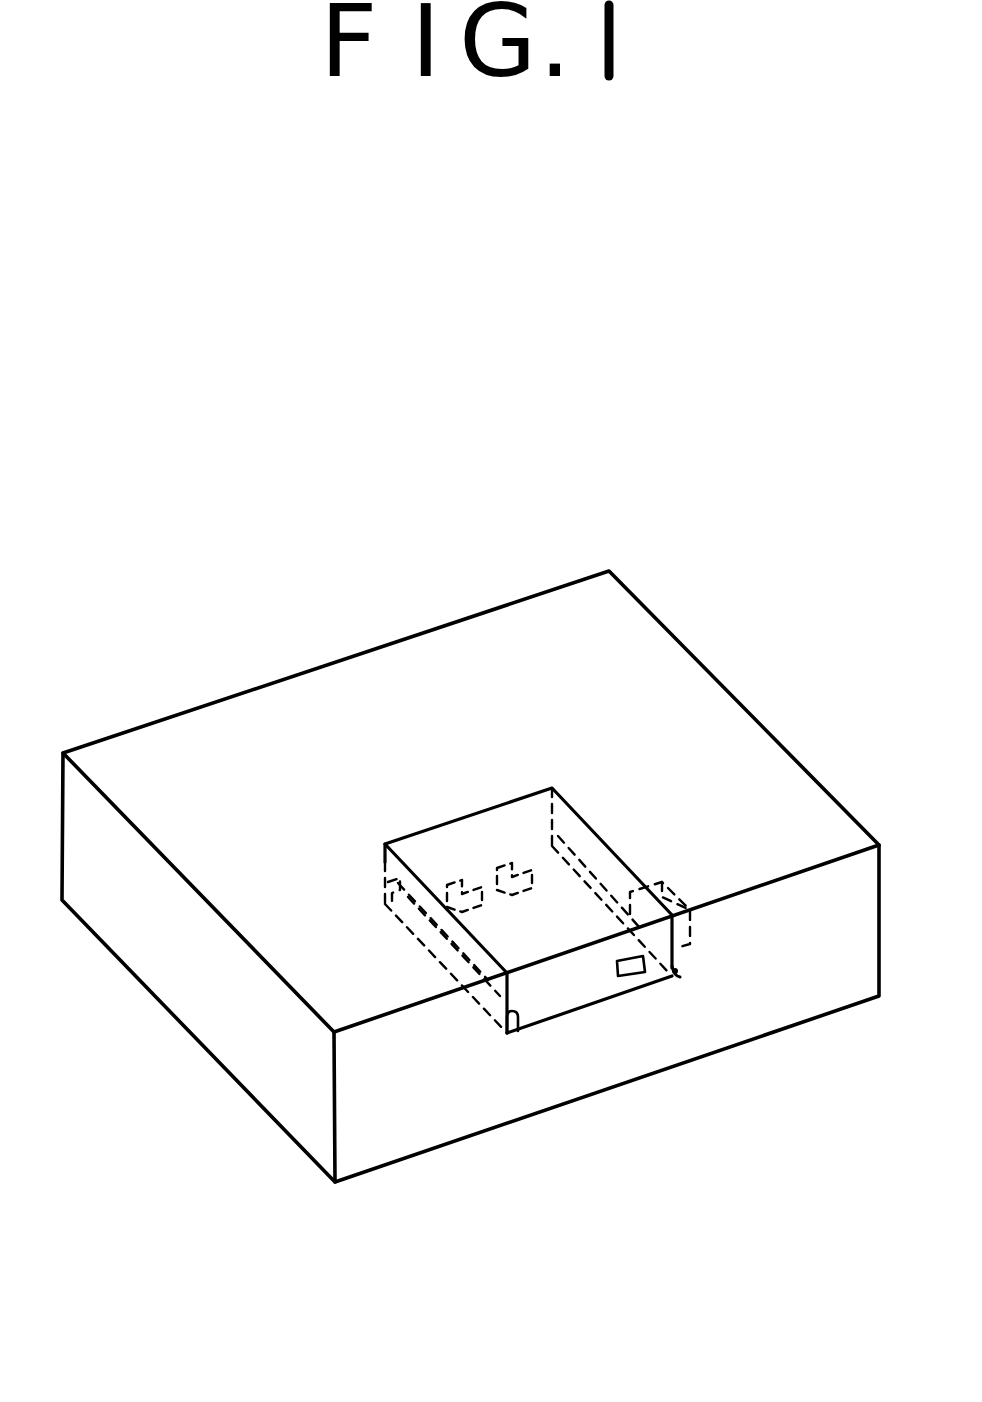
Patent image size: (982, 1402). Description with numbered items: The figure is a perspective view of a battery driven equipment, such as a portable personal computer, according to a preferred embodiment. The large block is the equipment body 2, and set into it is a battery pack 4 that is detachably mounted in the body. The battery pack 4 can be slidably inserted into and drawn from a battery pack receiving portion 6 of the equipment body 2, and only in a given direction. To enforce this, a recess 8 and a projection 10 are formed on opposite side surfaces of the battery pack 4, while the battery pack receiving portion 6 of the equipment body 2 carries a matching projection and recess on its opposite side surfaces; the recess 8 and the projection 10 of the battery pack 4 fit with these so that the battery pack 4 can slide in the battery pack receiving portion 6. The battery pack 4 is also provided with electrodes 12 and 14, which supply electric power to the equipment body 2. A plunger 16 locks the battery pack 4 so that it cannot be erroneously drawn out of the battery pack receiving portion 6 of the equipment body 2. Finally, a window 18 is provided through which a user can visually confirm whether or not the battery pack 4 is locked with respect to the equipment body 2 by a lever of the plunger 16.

The equipment body 2 is at (665, 665).
The battery pack 4 is at (583, 986).
The battery pack receiving portion 6 is at (545, 1022).
The recess 8 is at (520, 1033).
The projection 10 is at (678, 971).
The electrode 12 is at (455, 890).
The electrode 14 is at (510, 877).
The plunger 16 is at (672, 891).
The window 18 is at (638, 975).